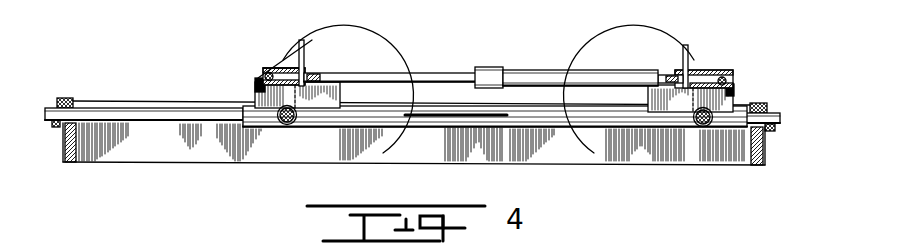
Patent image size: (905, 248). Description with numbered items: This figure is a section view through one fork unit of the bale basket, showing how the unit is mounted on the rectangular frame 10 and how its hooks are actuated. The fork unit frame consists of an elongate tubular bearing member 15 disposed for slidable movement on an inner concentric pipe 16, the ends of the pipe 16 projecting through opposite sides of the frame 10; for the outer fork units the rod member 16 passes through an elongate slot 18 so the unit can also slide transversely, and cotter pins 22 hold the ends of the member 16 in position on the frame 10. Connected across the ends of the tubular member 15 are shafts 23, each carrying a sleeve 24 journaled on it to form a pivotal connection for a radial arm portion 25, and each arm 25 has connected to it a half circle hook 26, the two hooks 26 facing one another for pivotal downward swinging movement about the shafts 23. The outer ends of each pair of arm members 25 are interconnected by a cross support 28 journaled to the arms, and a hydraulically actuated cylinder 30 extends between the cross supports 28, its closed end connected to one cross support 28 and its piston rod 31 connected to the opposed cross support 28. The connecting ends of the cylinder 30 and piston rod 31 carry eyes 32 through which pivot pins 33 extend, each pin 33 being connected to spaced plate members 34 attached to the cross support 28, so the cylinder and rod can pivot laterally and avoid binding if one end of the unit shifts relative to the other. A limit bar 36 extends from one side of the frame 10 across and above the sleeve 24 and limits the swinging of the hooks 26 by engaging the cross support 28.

The rectangular frame 10 is at (505, 163).
The elongate tubular bearing member 15 is at (444, 127).
The inner concentric pipe 16 is at (126, 108).
The elongate slot 18 is at (72, 100).
The cotter pin 22 is at (57, 99).
The shaft 23 is at (281, 121).
The sleeve 24 is at (288, 124).
The radial arm portion 25 is at (268, 65).
The half circle hook 26 is at (364, 48).
The cross support 28 is at (247, 64).
The hydraulically actuated cylinder 30 is at (534, 70).
The piston rod 31 is at (429, 73).
The eye 32 is at (293, 68).
The pivot pin 33 is at (304, 42).
The plate member 34 is at (255, 86).
The limit bar 36 is at (331, 108).